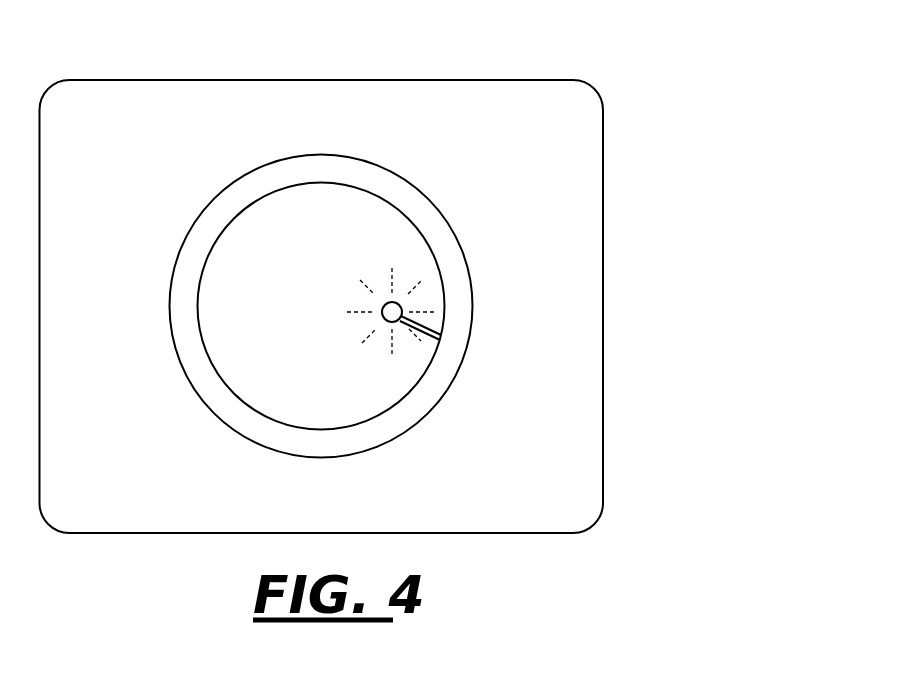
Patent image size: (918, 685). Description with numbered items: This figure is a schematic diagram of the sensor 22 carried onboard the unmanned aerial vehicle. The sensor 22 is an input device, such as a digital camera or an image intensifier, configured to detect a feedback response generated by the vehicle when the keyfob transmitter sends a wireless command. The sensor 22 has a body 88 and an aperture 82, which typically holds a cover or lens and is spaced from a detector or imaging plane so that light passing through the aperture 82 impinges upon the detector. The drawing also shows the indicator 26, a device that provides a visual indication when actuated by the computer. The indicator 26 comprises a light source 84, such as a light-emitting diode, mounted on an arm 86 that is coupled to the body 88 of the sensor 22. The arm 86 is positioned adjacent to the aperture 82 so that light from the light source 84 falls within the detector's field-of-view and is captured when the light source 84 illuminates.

The sensor 22 is at (524, 76).
The body 88 is at (382, 182).
The aperture 82 is at (384, 204).
The light source 84 is at (401, 304).
The arm 86 is at (440, 326).
The indicator 26 is at (412, 338).